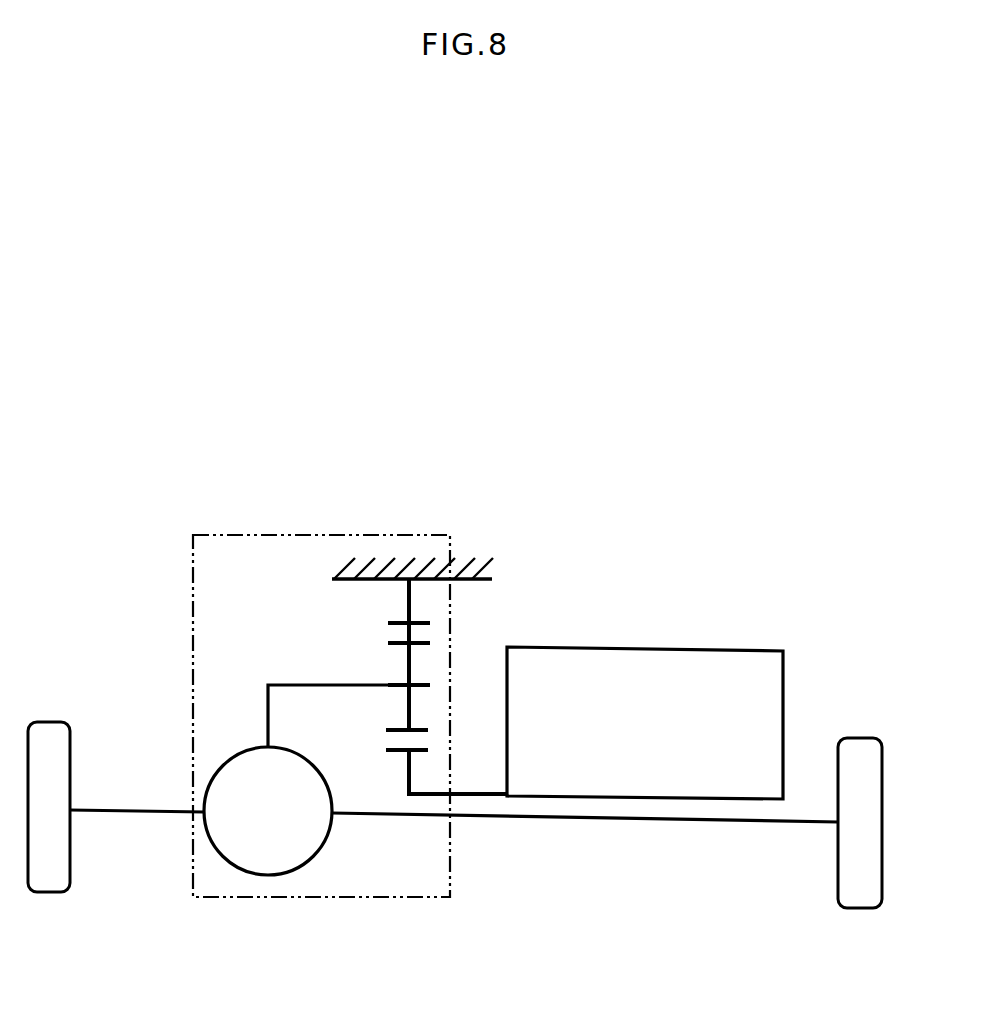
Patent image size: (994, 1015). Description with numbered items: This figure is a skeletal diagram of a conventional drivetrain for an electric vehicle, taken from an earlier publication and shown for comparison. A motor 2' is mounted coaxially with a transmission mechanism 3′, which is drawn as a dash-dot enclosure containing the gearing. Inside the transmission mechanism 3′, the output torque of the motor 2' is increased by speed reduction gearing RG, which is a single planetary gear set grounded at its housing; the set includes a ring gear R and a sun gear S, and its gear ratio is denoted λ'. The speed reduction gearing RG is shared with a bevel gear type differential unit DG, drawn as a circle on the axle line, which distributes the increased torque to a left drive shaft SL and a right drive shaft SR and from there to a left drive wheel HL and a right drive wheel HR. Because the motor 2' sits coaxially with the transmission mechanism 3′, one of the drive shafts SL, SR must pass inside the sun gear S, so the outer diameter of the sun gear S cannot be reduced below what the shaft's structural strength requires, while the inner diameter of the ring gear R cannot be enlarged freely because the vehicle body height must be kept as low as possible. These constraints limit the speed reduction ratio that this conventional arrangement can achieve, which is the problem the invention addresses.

The transmission mechanism 3′ is at (450, 537).
The motor 2' is at (645, 694).
The speed reduction gearing RG is at (437, 631).
The ring gear R is at (396, 624).
The sun gear S is at (409, 771).
The differential unit DG is at (303, 752).
The left drive wheel HL is at (62, 722).
The right drive wheel HR is at (864, 738).
The left drive shaft SL is at (128, 810).
The right drive shaft SR is at (655, 821).